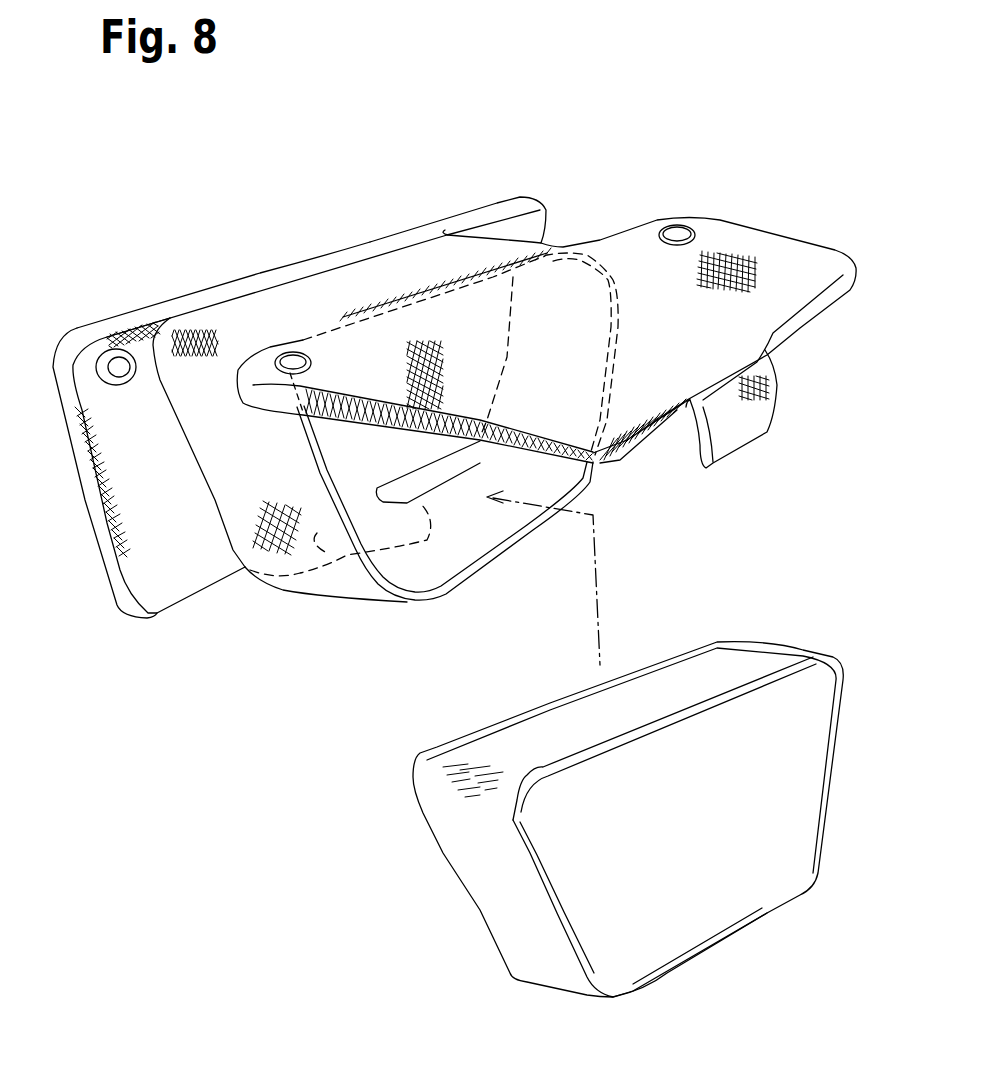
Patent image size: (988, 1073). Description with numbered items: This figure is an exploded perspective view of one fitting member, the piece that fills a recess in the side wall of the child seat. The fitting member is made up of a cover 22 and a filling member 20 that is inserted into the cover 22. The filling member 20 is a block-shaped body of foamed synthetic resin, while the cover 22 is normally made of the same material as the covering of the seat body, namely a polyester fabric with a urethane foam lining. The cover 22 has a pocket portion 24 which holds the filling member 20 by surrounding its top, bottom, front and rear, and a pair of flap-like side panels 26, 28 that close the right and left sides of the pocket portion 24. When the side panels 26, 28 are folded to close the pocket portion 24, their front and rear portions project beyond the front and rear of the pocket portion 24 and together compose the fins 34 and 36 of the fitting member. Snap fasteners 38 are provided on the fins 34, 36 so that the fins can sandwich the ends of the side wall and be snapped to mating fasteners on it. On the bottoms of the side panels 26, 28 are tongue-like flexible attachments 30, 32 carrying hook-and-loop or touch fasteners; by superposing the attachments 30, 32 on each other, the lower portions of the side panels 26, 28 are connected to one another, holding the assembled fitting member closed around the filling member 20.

The filling member 20 is at (645, 935).
The cover 22 is at (385, 212).
The pocket portion 24 is at (340, 577).
The side panel 26 is at (83, 463).
The side panel 28 is at (730, 311).
The attachment 30 is at (747, 425).
The attachment 32 is at (378, 520).
The fin 34 is at (270, 330).
The fin 36 is at (660, 203).
The snap fastener 38 is at (673, 230).